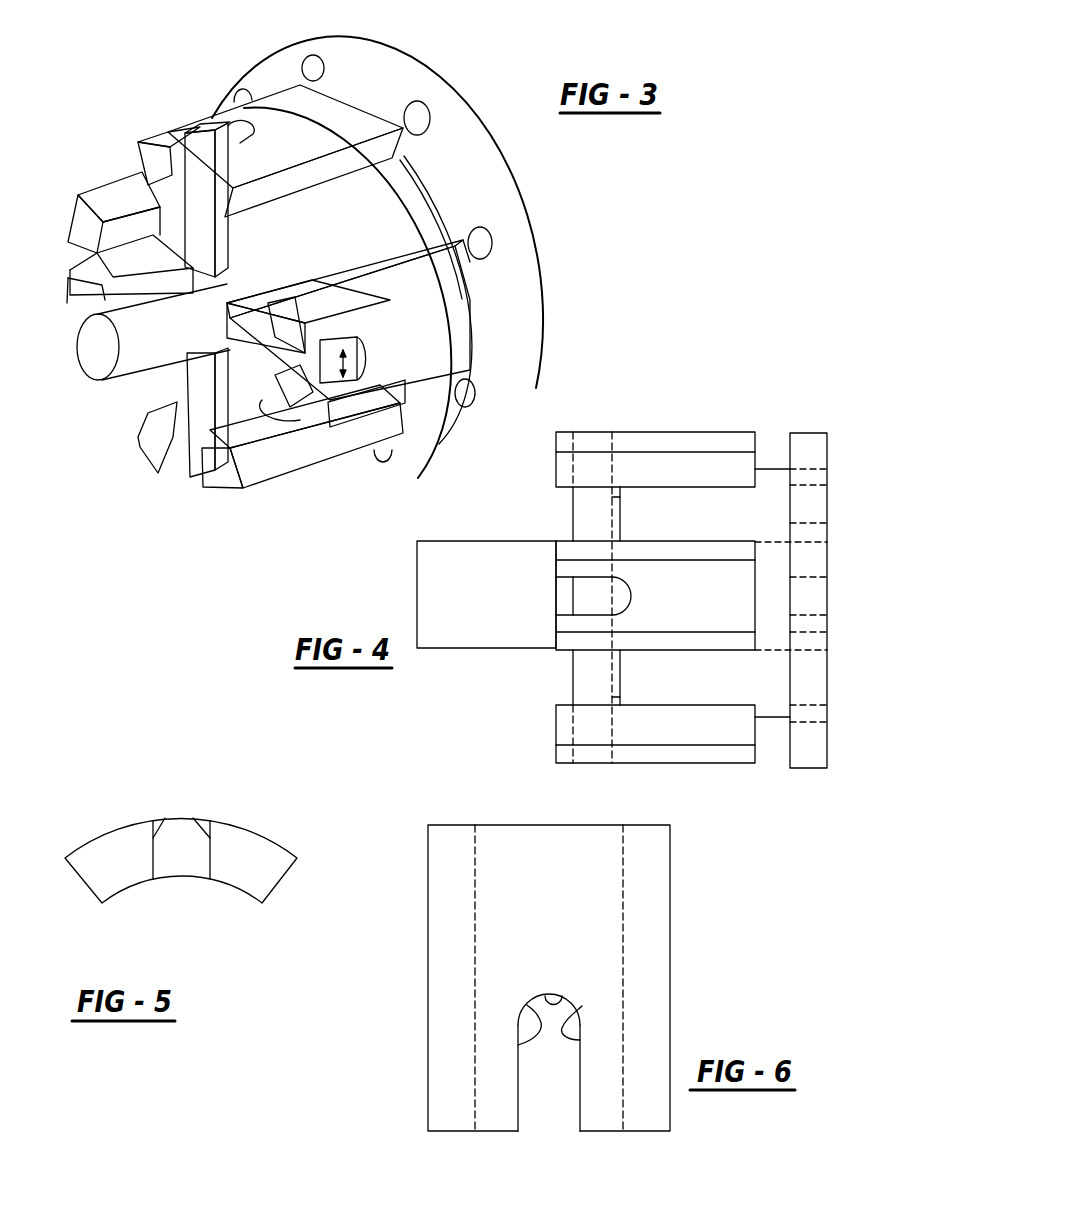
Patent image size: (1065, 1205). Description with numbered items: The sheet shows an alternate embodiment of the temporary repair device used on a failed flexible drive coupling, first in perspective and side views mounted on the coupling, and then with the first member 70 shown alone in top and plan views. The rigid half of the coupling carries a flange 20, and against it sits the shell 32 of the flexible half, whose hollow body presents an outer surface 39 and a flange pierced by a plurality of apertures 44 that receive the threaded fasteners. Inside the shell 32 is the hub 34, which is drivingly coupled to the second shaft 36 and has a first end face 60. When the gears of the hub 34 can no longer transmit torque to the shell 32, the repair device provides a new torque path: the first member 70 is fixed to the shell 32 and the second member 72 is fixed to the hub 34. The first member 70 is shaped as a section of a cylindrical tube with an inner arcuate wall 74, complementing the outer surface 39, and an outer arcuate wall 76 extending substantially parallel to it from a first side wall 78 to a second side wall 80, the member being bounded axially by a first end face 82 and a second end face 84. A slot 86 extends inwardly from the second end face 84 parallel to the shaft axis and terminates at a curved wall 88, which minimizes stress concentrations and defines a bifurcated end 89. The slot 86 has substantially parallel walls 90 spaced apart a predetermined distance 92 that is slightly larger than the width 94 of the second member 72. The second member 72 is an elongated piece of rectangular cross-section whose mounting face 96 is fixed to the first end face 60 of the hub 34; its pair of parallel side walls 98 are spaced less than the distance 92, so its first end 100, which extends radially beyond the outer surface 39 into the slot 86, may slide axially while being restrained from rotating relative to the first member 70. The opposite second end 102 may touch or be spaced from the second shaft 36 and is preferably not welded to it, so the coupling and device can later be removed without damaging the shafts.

In FIG. 3, the flange 20 is at (392, 60).
In FIG. 3, the shell 32 is at (405, 220).
In FIG. 3, the hub 34 is at (257, 390).
In FIG. 3, the second shaft 36 is at (92, 363).
In FIG. 4, the second shaft 36 is at (441, 621).
In FIG. 3, the outer surface 39 is at (383, 194).
In FIG. 3, the apertures 44 is at (423, 114).
In FIG. 4, the first end face 60 is at (607, 514).
In FIG. 3, the first member 70 is at (150, 127).
In FIG. 5, the first member 70 is at (73, 785).
In FIG. 6, the first member 70 is at (694, 944).
In FIG. 3, the second member 72 is at (203, 131).
In FIG. 5, the inner arcuate wall 74 is at (240, 893).
In FIG. 5, the outer arcuate wall 76 is at (267, 835).
In FIG. 5, the first side wall 78 is at (87, 885).
In FIG. 5, the second side wall 80 is at (280, 883).
In FIG. 6, the first end face 82 is at (448, 825).
In FIG. 6, the second end face 84 is at (453, 1133).
In FIG. 3, the slot 86 is at (303, 362).
In FIG. 6, the slot 86 is at (574, 1095).
In FIG. 6, the curved wall 88 is at (563, 1008).
In FIG. 6, the bifurcated end 89 is at (628, 1138).
In FIG. 5, the walls 90 is at (167, 815).
In FIG. 6, the walls 90 is at (542, 1023).
In FIG. 4, the distance 92 is at (544, 615).
In FIG. 6, the distance 92 is at (580, 1063).
In FIG. 3, the width 94 is at (350, 398).
In FIG. 4, the mounting face 96 is at (612, 596).
In FIG. 3, the side walls 98 is at (263, 300).
In FIG. 3, the first end 100 is at (345, 336).
In FIG. 3, the second end 102 is at (252, 292).